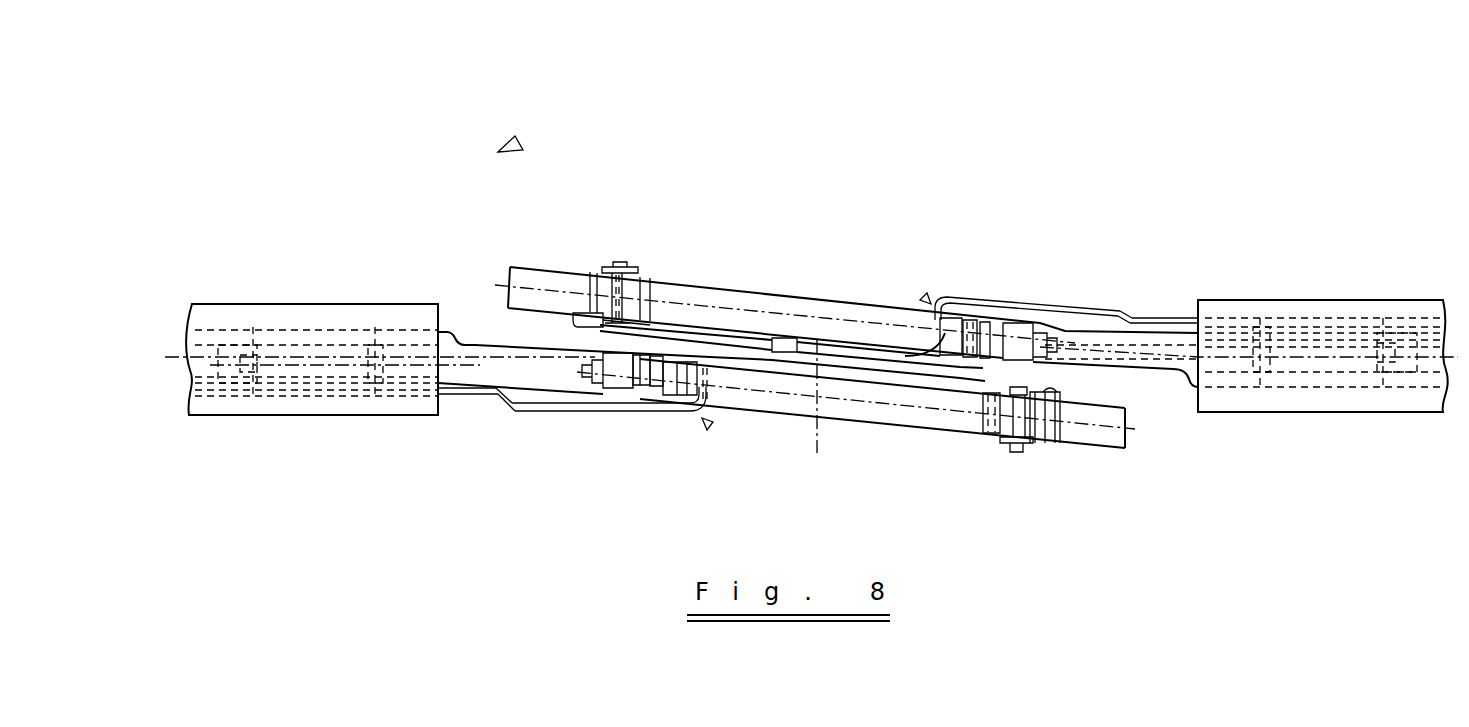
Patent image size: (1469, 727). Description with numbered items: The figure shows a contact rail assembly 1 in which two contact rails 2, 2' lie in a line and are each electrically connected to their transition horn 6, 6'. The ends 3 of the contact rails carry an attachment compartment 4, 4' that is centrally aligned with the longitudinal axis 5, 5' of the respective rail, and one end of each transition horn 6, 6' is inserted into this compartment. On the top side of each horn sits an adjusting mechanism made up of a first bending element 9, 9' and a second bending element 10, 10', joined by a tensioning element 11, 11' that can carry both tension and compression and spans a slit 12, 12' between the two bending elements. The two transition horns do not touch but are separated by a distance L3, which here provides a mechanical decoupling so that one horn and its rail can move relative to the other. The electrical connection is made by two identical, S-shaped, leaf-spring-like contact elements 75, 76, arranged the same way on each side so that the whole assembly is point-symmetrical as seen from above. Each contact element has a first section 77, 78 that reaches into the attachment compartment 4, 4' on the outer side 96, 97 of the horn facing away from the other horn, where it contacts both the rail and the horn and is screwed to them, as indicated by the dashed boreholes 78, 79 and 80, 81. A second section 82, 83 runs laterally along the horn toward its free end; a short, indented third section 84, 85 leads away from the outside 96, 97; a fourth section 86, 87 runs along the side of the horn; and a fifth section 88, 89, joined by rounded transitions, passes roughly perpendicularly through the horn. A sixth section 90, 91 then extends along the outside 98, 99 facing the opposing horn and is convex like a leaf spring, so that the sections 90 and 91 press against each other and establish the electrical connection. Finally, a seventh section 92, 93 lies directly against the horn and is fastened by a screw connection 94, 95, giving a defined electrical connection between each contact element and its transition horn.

The contact rail assembly 1 is at (510, 140).
The contact rail 2 is at (312, 312).
The contact rail 2' is at (1323, 311).
The end of the contact rail 3 is at (442, 308).
The attachment compartment 4 is at (313, 270).
The attachment compartment 4' is at (1322, 446).
The longitudinal axis 5 is at (368, 287).
The longitudinal axis 5' is at (1249, 283).
The transition horn 6 is at (695, 302).
The transition horn 6' is at (1115, 414).
The first bending element 9 is at (588, 429).
The first bending element 9' is at (1048, 285).
The second bending element 10 is at (685, 434).
The second bending element 10' is at (890, 429).
The tensioning element 11 is at (613, 430).
The tensioning element 11' is at (956, 283).
The slit 12 is at (640, 431).
The slit 12' is at (990, 284).
The contact element 75 is at (710, 424).
The contact element 76 is at (926, 297).
The first section 77 is at (317, 395).
The first section 78 is at (253, 382).
The borehole 79 is at (372, 402).
The borehole 80 is at (1257, 365).
The borehole 81 is at (1390, 359).
The second section 82 is at (448, 400).
The second section 83 is at (1183, 318).
The third section 84 is at (502, 407).
The third section 85 is at (1135, 316).
The fourth section 86 is at (558, 414).
The fourth section 87 is at (1087, 309).
The fifth section 88 is at (713, 394).
The fifth section 89 is at (918, 352).
The sixth section 90 is at (798, 366).
The sixth section 91 is at (801, 340).
The seventh section 92 is at (1057, 446).
The seventh section 93 is at (553, 306).
The screw connection 94 is at (1008, 452).
The screw connection 95 is at (633, 266).
The outer side 96 is at (957, 431).
The outer side 97 is at (520, 265).
The outside 98 is at (1126, 410).
The outside 99 is at (503, 317).
The distance L3 is at (748, 340).